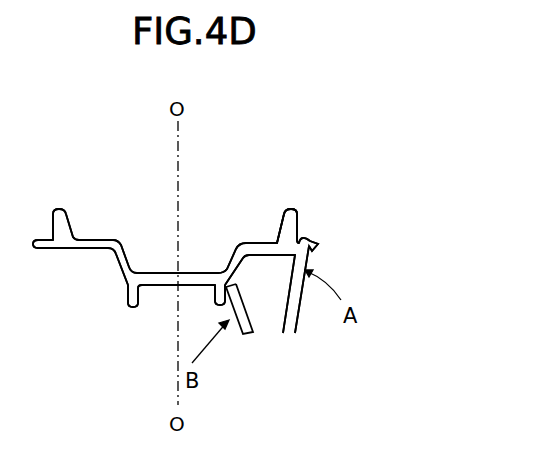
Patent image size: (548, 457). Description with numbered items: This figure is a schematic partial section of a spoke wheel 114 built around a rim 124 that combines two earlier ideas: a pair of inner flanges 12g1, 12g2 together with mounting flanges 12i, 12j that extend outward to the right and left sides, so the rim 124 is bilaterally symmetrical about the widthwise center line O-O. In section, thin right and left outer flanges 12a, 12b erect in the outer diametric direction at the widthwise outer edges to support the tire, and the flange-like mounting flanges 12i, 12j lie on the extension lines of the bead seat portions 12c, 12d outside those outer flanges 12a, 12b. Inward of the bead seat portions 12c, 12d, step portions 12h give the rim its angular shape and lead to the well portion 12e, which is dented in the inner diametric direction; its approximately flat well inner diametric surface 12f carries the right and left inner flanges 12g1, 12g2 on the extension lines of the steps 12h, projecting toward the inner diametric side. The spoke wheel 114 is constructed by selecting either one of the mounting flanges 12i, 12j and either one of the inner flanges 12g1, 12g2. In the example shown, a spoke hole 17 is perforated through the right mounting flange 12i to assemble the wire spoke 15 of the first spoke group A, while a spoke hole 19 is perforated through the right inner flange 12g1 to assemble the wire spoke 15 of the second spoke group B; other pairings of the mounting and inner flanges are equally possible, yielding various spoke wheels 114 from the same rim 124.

The spoke wheel 114 is at (84, 125).
The rim 124 is at (300, 172).
The right outer flange 12a is at (278, 226).
The left outer flange 12b is at (55, 207).
The bead seat portion 12c is at (260, 242).
The bead seat portion 12d is at (92, 239).
The well portion 12e is at (152, 272).
The well inner diametric surface 12f is at (155, 287).
The right inner flange 12g1 is at (220, 307).
The left inner flange 12g2 is at (133, 309).
The step portion 12h is at (226, 262).
The right mounting flange 12i is at (318, 244).
The left mounting flange 12j is at (57, 250).
The wire spoke 15 is at (296, 325).
The spoke hole 17 is at (305, 238).
The spoke hole 19 is at (240, 283).